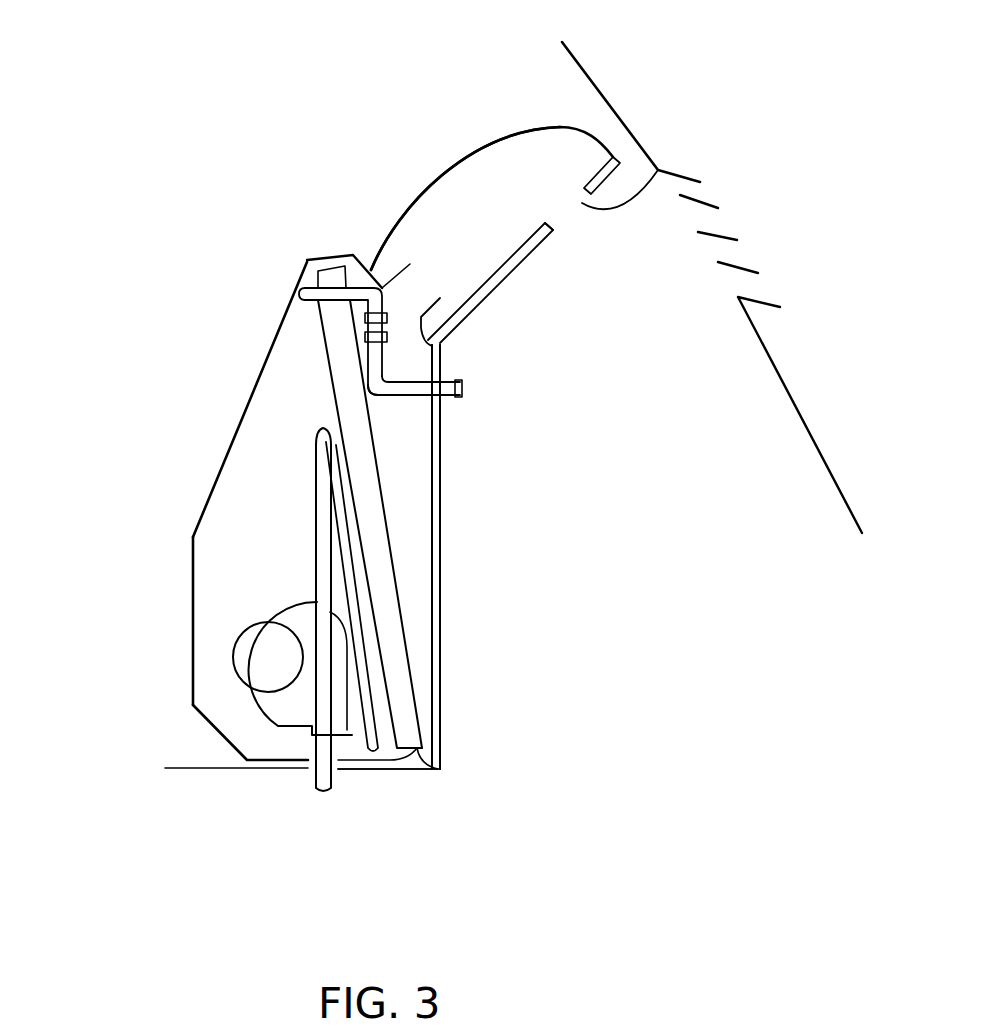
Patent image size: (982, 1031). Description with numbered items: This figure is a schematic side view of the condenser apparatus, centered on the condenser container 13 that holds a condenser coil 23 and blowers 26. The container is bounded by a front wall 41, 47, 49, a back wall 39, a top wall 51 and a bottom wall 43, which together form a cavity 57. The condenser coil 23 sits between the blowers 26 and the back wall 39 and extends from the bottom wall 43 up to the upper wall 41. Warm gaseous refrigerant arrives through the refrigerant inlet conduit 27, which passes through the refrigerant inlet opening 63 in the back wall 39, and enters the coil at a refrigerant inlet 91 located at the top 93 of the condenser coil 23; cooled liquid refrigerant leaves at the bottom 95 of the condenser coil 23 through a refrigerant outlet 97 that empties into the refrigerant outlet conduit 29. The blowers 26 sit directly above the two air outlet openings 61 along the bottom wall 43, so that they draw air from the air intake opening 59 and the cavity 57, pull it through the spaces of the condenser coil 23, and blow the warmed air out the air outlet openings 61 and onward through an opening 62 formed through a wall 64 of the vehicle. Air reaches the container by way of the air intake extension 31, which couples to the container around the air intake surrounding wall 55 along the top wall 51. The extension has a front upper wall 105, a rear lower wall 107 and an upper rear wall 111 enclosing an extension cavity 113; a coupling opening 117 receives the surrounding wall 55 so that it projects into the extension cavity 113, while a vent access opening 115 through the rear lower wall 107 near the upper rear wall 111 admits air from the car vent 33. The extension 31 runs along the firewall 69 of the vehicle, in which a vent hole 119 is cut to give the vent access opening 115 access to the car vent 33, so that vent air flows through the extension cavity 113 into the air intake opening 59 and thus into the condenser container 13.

The condenser container 13 is at (127, 558).
The condenser coil 23 is at (380, 573).
The blowers 26 is at (212, 667).
The refrigerant inlet conduit 27 is at (457, 378).
The refrigerant outlet conduit 29 is at (315, 785).
The air intake extension 31 is at (452, 97).
The car vent 33 is at (728, 245).
The back wall 39 is at (432, 628).
The front wall 41 is at (333, 257).
The bottom wall 43 is at (413, 763).
The front wall 47 is at (240, 418).
The front wall 49 is at (193, 610).
The top wall 51 is at (437, 348).
The air intake surrounding wall 55 is at (422, 322).
The cavity 57 is at (407, 530).
The air intake opening 59 is at (423, 284).
The air outlet openings 61 is at (210, 738).
The opening 62 is at (340, 772).
The refrigerant inlet opening 63 is at (448, 396).
The wall of the vehicle 64 is at (197, 768).
The firewall 69 is at (438, 685).
The refrigerant inlet 91 is at (310, 290).
The top of the condenser coil 93 is at (307, 262).
The bottom of the condenser coil 95 is at (413, 753).
The refrigerant outlet 97 is at (385, 757).
The front upper wall 105 is at (545, 130).
The rear lower wall 107 is at (537, 243).
The upper rear wall 111 is at (600, 132).
The extension cavity 113 is at (450, 197).
The vent access opening 115 is at (612, 145).
The coupling opening 117 is at (386, 284).
The vent hole 119 is at (657, 170).